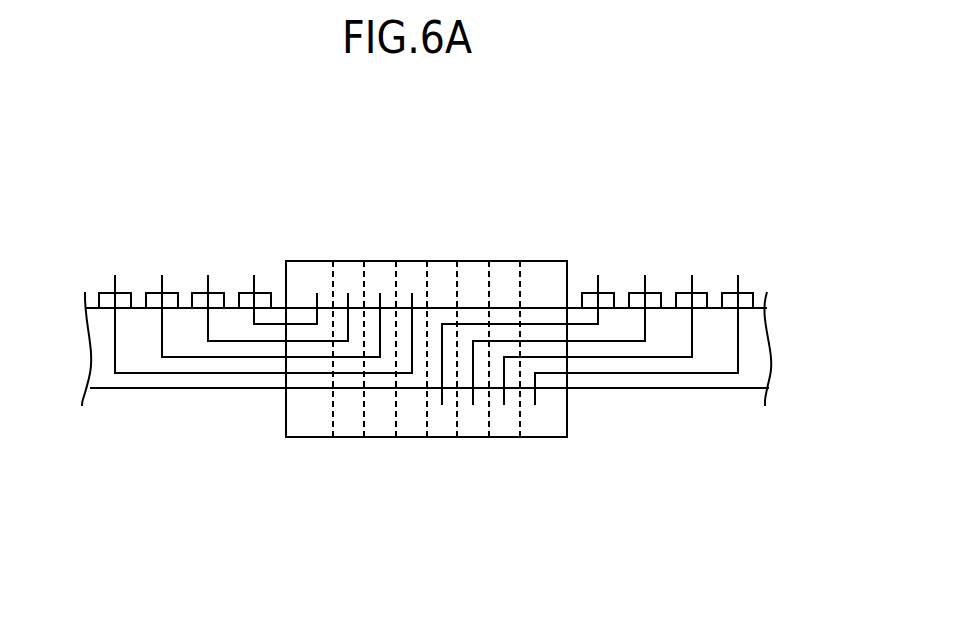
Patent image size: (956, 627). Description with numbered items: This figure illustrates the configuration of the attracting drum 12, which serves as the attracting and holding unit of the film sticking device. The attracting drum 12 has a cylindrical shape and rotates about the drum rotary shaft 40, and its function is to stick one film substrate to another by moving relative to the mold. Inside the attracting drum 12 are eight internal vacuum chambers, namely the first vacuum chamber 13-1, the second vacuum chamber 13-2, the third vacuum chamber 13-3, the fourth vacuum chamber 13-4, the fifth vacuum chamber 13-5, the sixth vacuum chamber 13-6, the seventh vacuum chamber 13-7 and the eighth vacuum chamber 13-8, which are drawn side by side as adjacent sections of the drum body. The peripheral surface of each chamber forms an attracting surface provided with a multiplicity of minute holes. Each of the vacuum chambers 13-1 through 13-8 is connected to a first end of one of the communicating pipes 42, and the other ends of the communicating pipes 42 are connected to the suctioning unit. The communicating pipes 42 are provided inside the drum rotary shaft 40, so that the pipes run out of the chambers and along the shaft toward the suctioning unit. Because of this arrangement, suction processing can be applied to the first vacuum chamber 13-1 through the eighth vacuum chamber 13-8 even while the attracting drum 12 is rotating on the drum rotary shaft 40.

The attracting drum 12 is at (453, 323).
The first vacuum chamber 13-1 is at (312, 272).
The second vacuum chamber 13-2 is at (343, 425).
The third vacuum chamber 13-3 is at (380, 285).
The fourth vacuum chamber 13-4 is at (408, 425).
The fifth vacuum chamber 13-5 is at (444, 272).
The sixth vacuum chamber 13-6 is at (470, 425).
The seventh vacuum chamber 13-7 is at (506, 285).
The eighth vacuum chamber 13-8 is at (540, 425).
The drum rotary shaft 40 is at (106, 389).
The communicating pipes 42 is at (282, 324).